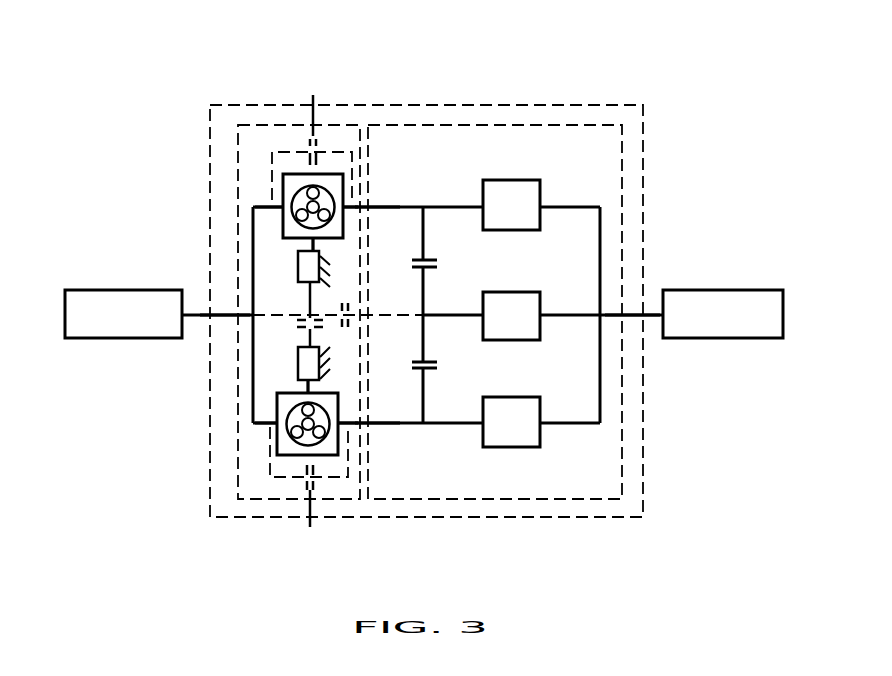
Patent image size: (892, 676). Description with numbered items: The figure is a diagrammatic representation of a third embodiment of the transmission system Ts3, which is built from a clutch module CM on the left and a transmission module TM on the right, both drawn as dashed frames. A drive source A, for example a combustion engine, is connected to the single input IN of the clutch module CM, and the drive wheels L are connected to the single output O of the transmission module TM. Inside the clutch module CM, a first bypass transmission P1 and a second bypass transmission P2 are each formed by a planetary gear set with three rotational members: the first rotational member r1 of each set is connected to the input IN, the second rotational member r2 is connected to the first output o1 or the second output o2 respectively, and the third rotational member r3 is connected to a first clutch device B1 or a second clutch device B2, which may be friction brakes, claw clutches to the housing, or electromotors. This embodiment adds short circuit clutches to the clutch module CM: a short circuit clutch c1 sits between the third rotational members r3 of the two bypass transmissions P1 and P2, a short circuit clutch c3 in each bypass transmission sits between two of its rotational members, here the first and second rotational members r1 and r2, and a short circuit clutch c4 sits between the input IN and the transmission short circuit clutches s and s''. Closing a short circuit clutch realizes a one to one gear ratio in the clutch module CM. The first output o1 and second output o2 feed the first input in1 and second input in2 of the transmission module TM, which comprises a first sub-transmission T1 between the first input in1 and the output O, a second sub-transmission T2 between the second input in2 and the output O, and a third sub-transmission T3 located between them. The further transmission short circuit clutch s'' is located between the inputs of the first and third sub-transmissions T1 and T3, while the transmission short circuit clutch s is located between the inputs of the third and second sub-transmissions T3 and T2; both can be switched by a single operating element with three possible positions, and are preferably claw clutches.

The transmission system Ts3 is at (213, 103).
The clutch module CM is at (258, 125).
The transmission module TM is at (565, 125).
The first bypass transmission P1 is at (293, 192).
The second bypass transmission P2 is at (290, 448).
The short circuit clutch c3 is at (311, 315).
The short circuit clutch c1 is at (297, 325).
The short circuit clutch c4 is at (348, 322).
The first clutch device B1 is at (308, 268).
The second clutch device B2 is at (310, 363).
The first rotational member r1 is at (283, 203).
The second rotational member r2 is at (347, 208).
The third rotational member r3 is at (308, 237).
The first output o1 is at (360, 205).
The second output o2 is at (360, 425).
The first input in1 is at (367, 203).
The second input in2 is at (367, 425).
The further transmission short circuit clutch s'' is at (441, 265).
The transmission short circuit clutch s is at (440, 367).
The first sub-transmission T1 is at (512, 198).
The second sub-transmission T2 is at (512, 423).
The third sub-transmission T3 is at (520, 287).
The drive source A is at (124, 317).
The drive wheels L is at (726, 320).
The input IN is at (238, 315).
The output O is at (622, 315).